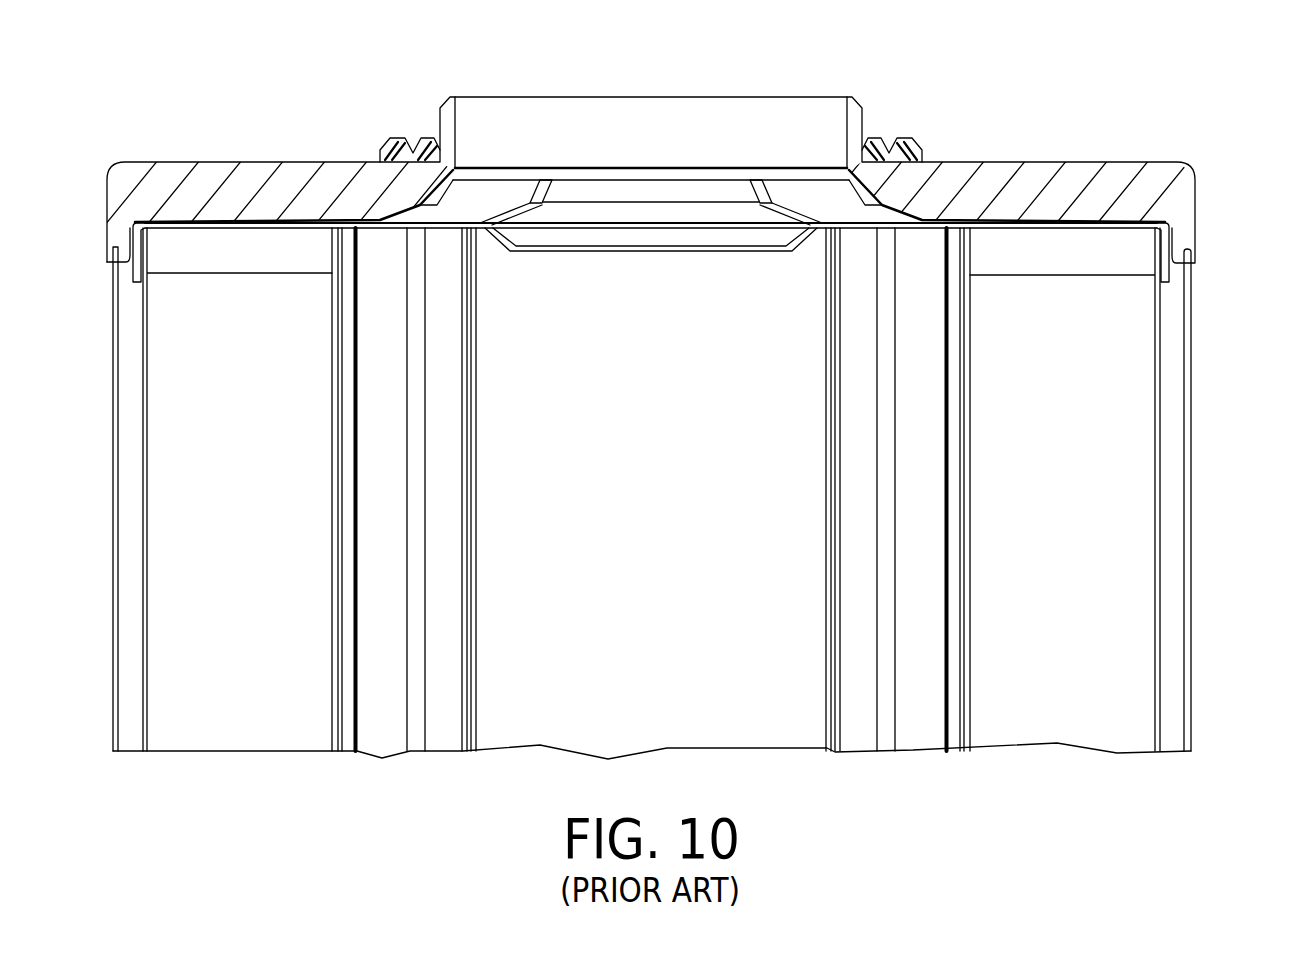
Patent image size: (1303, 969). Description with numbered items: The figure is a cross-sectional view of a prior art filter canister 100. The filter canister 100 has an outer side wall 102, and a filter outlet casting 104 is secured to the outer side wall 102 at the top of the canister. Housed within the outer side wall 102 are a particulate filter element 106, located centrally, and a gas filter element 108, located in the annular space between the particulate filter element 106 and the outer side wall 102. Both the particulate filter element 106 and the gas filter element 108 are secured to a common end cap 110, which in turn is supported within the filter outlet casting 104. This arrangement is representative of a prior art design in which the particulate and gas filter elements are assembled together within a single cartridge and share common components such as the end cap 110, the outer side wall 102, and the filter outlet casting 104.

The filter canister 100 is at (228, 115).
The outer side wall 102 is at (118, 417).
The filter outlet casting 104 is at (1123, 155).
The particulate filter element 106 is at (919, 720).
The gas filter element 108 is at (1110, 472).
The end cap 110 is at (1172, 284).